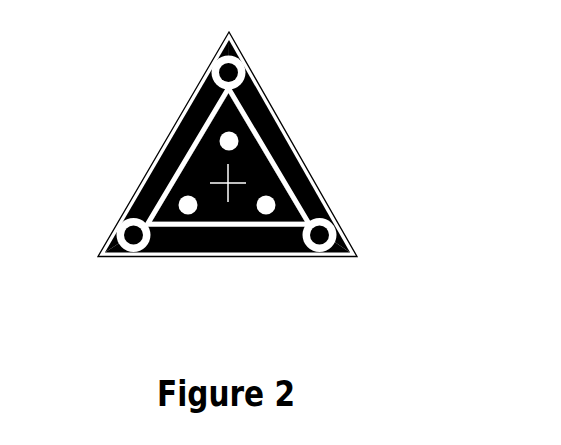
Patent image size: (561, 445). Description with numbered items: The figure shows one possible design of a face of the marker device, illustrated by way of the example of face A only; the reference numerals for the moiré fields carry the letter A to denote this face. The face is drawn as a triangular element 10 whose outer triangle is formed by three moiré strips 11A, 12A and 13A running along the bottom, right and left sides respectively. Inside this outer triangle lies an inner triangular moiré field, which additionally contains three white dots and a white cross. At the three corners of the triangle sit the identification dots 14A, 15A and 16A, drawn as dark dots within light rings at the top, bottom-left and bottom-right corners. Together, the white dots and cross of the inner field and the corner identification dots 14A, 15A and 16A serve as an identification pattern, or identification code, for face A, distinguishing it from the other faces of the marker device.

The triangular tile 10 is at (314, 130).
The moiré strip 11A is at (254, 259).
The moiré strip 12A is at (312, 170).
The moiré strip 13A is at (167, 124).
The identification dot 14A is at (242, 59).
The identification dot 15A is at (113, 238).
The identification dot 16A is at (339, 236).